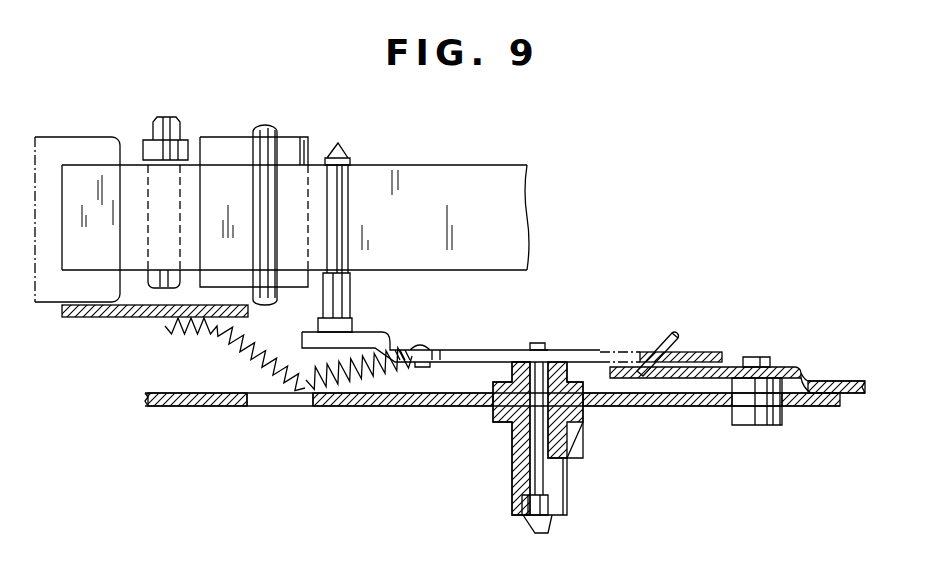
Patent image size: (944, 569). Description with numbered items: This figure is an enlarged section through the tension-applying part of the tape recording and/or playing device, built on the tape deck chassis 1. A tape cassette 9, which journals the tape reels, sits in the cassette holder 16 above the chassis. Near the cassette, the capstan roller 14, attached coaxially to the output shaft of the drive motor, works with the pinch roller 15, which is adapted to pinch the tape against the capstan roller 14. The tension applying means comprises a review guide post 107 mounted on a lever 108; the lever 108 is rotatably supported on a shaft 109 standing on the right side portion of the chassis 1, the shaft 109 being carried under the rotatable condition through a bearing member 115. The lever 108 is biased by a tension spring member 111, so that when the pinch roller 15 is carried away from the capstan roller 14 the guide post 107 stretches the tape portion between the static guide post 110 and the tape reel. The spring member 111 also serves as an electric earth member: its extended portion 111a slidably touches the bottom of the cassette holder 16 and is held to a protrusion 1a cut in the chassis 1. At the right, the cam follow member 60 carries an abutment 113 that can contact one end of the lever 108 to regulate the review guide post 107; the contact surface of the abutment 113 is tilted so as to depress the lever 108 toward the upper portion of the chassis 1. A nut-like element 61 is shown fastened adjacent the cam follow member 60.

The tape cassette 9 is at (92, 134).
The static guide post 110 is at (157, 128).
The pinch roller 15 is at (230, 146).
The capstan roller 14 is at (270, 130).
The review guide post 107 is at (347, 193).
The lever 108 is at (454, 356).
The cassette holder 16 is at (95, 316).
The extended portion 111a is at (167, 330).
The tape deck chassis 1 is at (413, 407).
The protrusion 1a is at (280, 392).
The tension spring member 111 is at (358, 383).
The shaft 109 is at (530, 454).
The bearing member 115 is at (525, 497).
The abutment 113 is at (662, 380).
The nut 61 is at (750, 357).
The cam follow member 60 is at (805, 369).